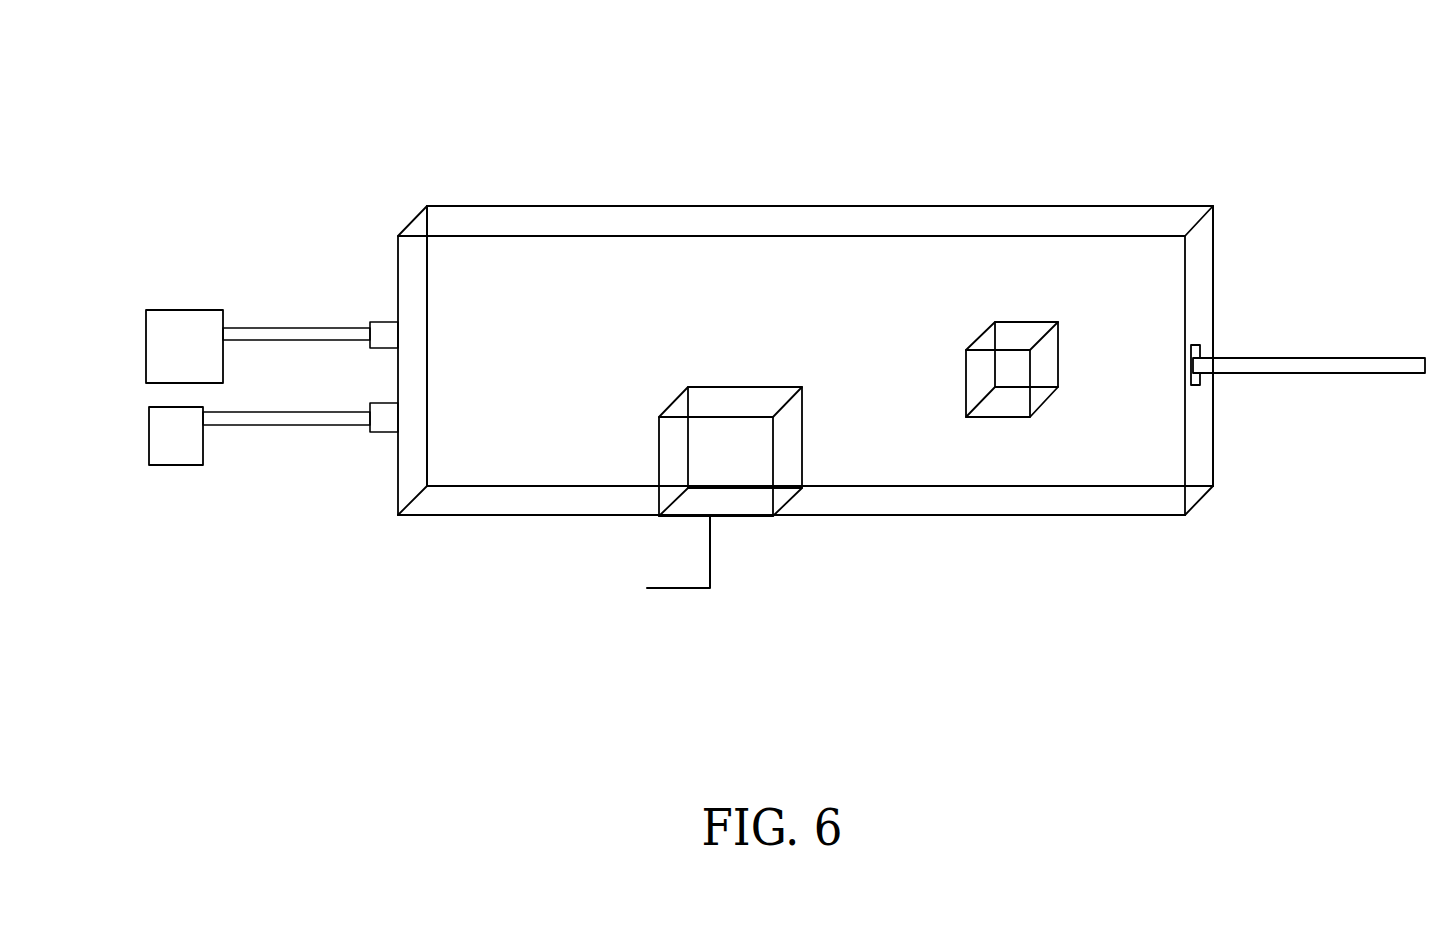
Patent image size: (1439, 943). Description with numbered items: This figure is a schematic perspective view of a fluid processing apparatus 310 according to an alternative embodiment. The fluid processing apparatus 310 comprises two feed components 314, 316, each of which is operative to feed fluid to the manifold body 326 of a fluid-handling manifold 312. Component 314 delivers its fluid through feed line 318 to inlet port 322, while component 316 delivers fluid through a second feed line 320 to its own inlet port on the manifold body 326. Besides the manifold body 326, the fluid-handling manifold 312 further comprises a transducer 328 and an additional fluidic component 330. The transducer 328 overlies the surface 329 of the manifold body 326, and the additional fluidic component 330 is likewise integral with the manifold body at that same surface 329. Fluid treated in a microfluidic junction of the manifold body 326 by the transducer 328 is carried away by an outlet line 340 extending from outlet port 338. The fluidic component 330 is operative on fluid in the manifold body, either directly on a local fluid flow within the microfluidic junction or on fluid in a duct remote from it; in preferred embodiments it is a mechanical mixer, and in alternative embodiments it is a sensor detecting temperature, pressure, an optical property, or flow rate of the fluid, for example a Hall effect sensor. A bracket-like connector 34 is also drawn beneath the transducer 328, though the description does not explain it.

The fluid processing apparatus 310 is at (934, 146).
The fluid-handling manifold 312 is at (1150, 205).
The component 314 is at (202, 330).
The component 316 is at (147, 457).
The feed line 318 is at (262, 340).
The feed line 320 is at (290, 412).
The inlet port 322 is at (382, 323).
The manifold body 326 is at (1117, 500).
The transducer 328 is at (667, 493).
The surface 329 is at (667, 273).
The additional fluidic component 330 is at (1013, 397).
The connector bracket 34 is at (688, 590).
The outlet port 338 is at (1193, 386).
The outlet line 340 is at (1403, 372).